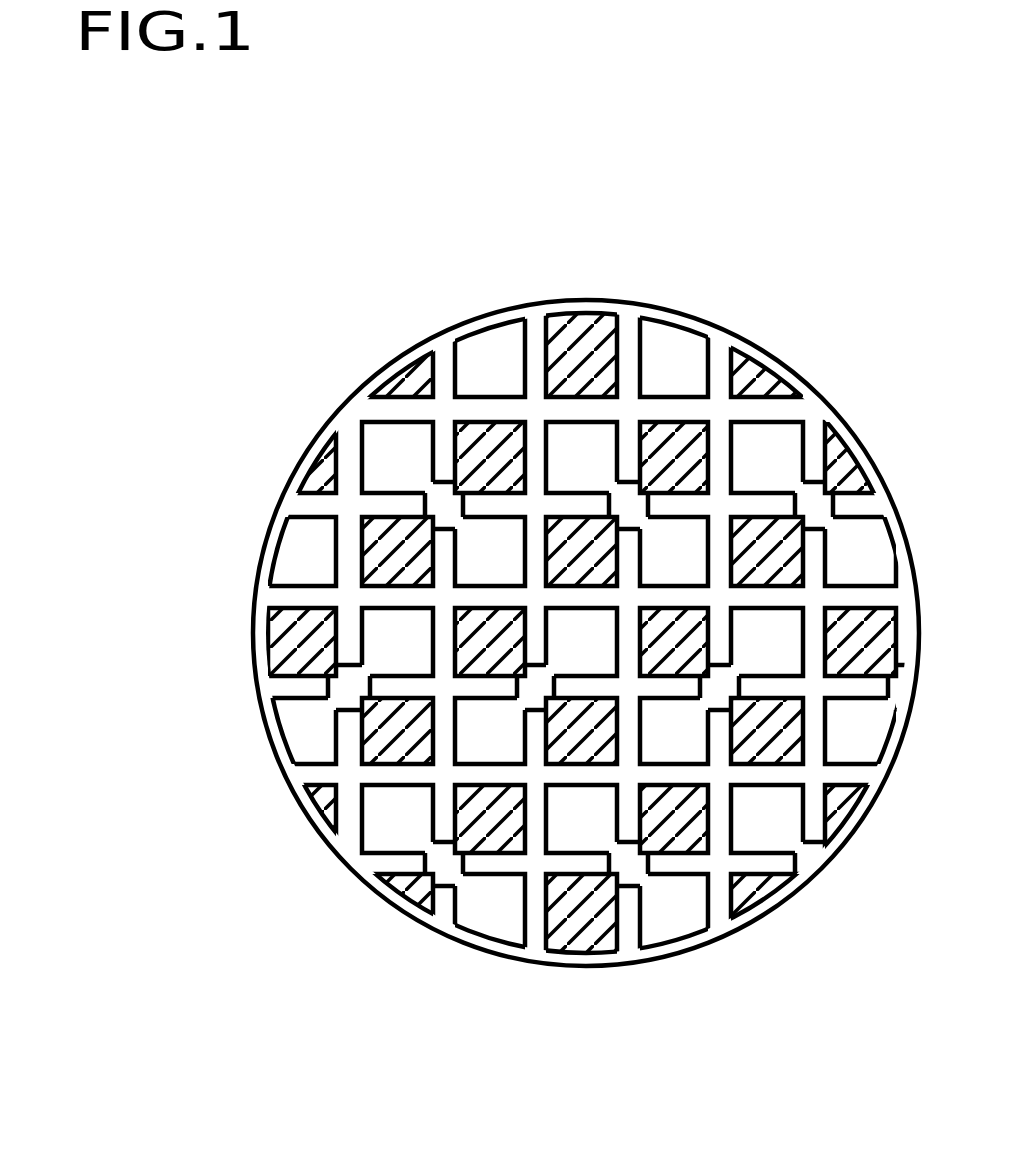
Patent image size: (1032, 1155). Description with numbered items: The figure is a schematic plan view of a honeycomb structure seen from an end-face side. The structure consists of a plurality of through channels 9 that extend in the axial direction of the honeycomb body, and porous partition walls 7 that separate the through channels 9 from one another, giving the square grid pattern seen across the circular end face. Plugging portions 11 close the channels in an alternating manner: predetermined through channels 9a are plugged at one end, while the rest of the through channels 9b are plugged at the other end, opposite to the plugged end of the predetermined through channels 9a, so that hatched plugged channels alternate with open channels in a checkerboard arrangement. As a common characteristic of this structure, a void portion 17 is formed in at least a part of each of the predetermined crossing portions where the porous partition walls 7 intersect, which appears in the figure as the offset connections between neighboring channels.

The partition wall 7 is at (770, 510).
The through channel 9 is at (88, 465).
The through channel 9a is at (497, 613).
The through channel 9b is at (472, 553).
The plugging portion 11 is at (472, 433).
The void portion in crossing portion 17 is at (622, 497).